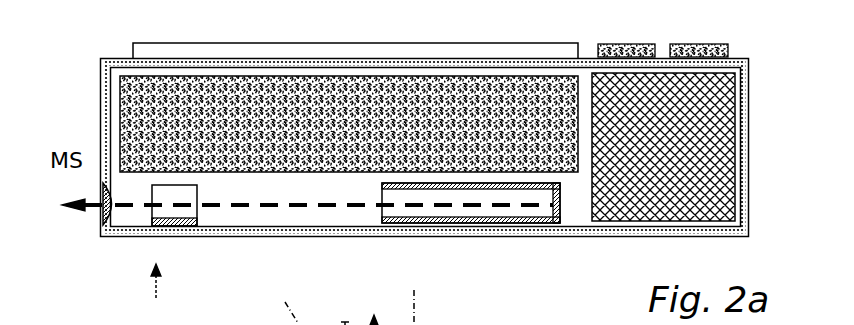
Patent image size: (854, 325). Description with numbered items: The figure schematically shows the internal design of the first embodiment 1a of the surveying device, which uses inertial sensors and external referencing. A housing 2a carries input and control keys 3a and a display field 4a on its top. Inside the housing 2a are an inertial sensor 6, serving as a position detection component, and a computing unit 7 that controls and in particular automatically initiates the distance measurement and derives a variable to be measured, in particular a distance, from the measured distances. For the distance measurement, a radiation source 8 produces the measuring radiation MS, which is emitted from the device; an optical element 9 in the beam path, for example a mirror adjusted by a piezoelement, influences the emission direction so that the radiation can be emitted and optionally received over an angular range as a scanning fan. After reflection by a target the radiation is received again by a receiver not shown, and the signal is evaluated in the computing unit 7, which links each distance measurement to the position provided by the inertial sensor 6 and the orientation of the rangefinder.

The first embodiment 1a is at (152, 294).
The housing 2a is at (322, 236).
The input and control keys 3a is at (699, 44).
The display field 4a is at (447, 50).
The inertial sensor 6 is at (278, 100).
The computing unit 7 is at (592, 74).
The radiation source 8 is at (457, 225).
The optical element 9 is at (197, 230).